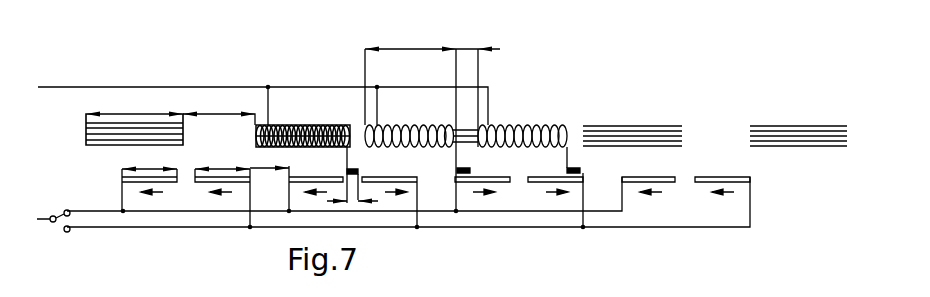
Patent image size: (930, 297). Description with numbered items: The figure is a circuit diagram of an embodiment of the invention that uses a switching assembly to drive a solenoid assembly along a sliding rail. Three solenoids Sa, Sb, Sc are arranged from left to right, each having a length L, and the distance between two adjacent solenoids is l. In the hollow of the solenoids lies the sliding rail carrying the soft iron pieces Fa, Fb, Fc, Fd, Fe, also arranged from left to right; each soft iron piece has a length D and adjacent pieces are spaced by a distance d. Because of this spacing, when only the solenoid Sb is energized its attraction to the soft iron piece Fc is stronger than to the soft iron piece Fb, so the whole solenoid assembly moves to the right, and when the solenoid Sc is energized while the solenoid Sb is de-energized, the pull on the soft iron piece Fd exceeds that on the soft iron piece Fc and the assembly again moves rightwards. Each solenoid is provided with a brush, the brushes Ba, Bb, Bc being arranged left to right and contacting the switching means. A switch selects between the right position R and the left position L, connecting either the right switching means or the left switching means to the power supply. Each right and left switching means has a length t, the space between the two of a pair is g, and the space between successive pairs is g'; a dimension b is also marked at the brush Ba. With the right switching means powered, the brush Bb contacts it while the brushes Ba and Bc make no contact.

The soft iron piece Fa is at (168, 170).
The soft iron piece Fb is at (349, 187).
The soft iron piece Fc is at (506, 170).
The soft iron piece Fd is at (632, 160).
The soft iron piece Fe is at (771, 160).
The solenoid Sa is at (303, 117).
The solenoid Sb is at (409, 117).
The solenoid Sc is at (522, 125).
The brush Ba is at (359, 175).
The brush Bb is at (469, 179).
The brush Bc is at (580, 187).
The right switch position R is at (62, 201).
The solenoid length L is at (278, 138).
The distance between adjacent solenoids l is at (477, 86).
The length of soft iron piece D is at (134, 104).
The distance between soft iron pieces d is at (219, 109).
The length of switching means t is at (186, 159).
The space between right and left switching means g is at (186, 156).
The space between pairs of switching means g' is at (269, 158).
The bridge width b is at (352, 192).